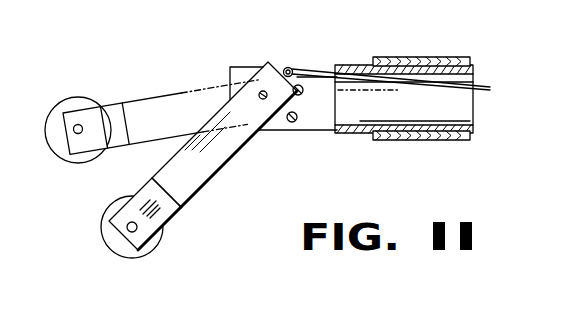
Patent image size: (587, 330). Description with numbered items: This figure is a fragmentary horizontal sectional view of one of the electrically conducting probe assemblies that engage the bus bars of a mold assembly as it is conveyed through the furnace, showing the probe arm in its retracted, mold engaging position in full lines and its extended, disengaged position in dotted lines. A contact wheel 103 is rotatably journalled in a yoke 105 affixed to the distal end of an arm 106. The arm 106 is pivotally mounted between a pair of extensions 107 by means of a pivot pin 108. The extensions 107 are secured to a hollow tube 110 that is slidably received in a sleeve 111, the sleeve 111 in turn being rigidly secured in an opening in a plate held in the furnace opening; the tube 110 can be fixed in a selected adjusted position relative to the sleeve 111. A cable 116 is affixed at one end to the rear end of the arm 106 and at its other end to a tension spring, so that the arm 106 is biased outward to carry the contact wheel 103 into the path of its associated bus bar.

The contact wheel 103 is at (105, 235).
The yoke 105 is at (172, 218).
The arm 106 is at (205, 172).
The extensions 107 is at (238, 72).
The pivot pin 108 is at (263, 99).
The hollow tube 110 is at (358, 63).
The sleeve 111 is at (433, 57).
The cable 116 is at (315, 71).